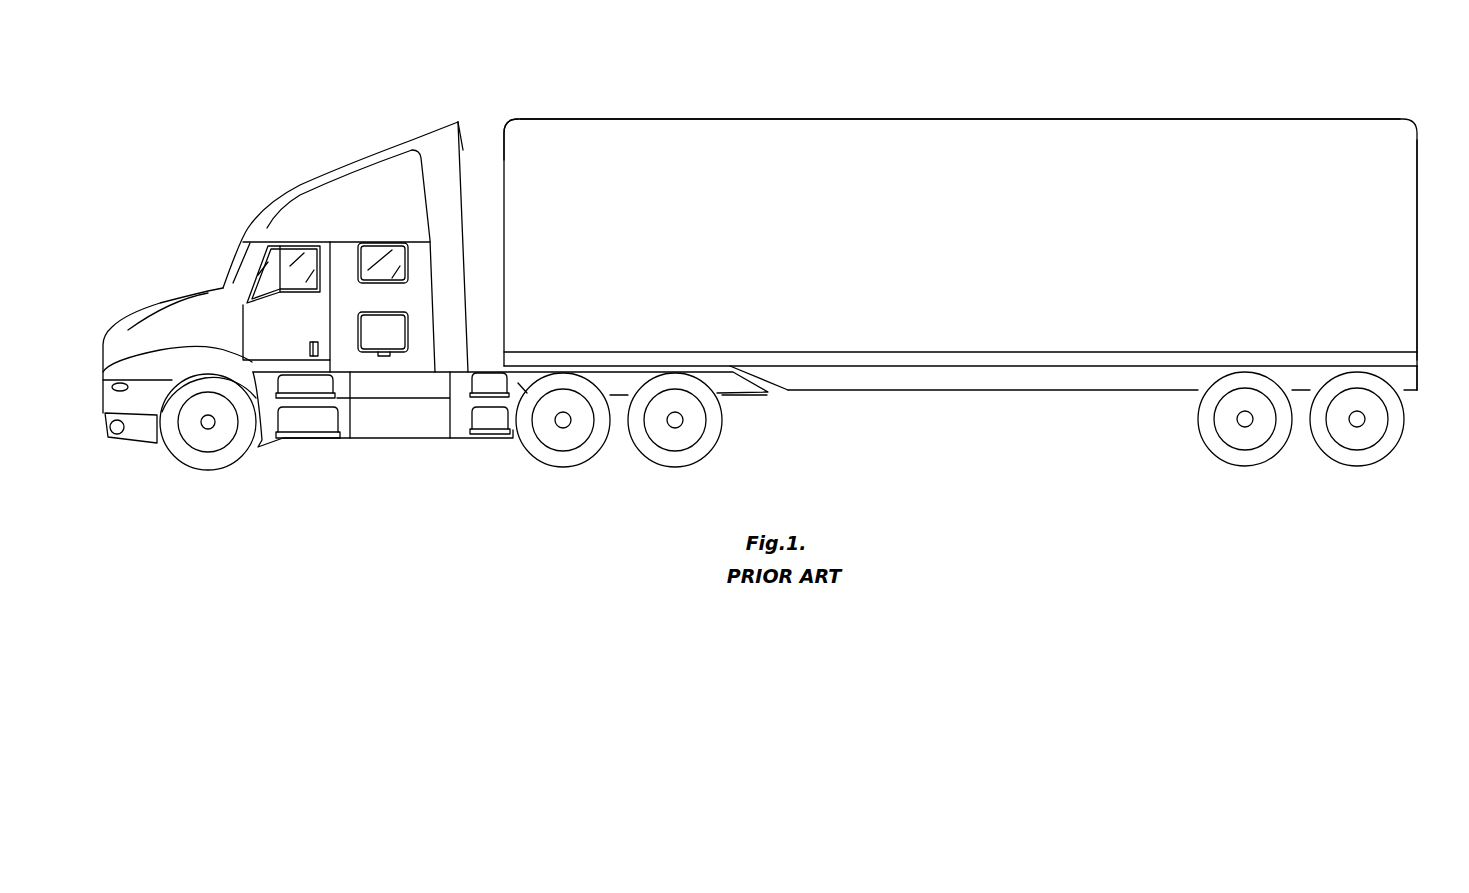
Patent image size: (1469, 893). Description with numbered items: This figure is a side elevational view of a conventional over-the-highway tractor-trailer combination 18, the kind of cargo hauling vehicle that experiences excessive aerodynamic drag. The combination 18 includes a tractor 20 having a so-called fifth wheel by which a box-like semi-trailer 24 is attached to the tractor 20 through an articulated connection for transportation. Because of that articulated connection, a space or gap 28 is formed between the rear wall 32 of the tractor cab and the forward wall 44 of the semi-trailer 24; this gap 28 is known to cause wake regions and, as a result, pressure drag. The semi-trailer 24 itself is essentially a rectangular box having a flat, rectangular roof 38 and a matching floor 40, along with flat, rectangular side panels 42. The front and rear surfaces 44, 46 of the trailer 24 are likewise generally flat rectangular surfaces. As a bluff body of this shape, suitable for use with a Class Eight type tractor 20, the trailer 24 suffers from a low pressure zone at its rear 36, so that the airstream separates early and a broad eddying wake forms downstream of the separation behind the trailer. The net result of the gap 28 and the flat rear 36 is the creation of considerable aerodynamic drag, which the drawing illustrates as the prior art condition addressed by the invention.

The tractor-trailer combination 18 is at (238, 174).
The tractor 20 is at (160, 474).
The semi-trailer 24 is at (1152, 108).
The gap 28 is at (494, 283).
The rear wall of the tractor cab 32 is at (463, 145).
The rear of the trailer 36 is at (1435, 387).
The roof 38 is at (985, 117).
The floor 40 is at (1132, 392).
The side panels 42 is at (868, 298).
The forward wall 44 is at (504, 160).
The rear surface 46 is at (1418, 262).